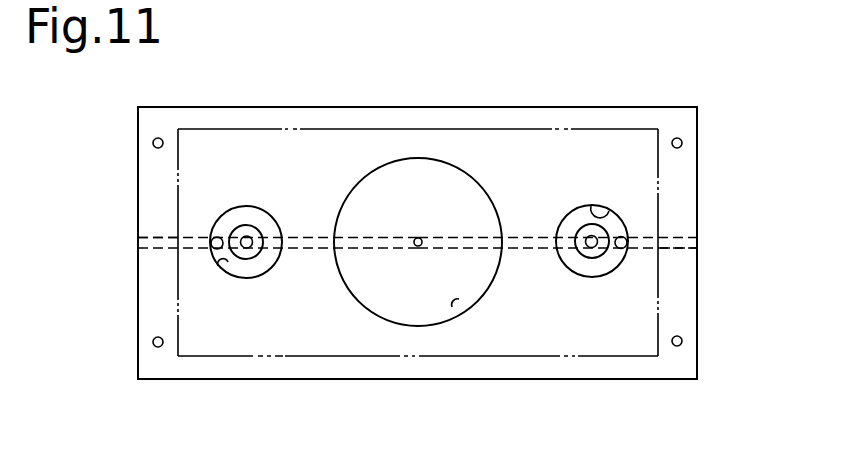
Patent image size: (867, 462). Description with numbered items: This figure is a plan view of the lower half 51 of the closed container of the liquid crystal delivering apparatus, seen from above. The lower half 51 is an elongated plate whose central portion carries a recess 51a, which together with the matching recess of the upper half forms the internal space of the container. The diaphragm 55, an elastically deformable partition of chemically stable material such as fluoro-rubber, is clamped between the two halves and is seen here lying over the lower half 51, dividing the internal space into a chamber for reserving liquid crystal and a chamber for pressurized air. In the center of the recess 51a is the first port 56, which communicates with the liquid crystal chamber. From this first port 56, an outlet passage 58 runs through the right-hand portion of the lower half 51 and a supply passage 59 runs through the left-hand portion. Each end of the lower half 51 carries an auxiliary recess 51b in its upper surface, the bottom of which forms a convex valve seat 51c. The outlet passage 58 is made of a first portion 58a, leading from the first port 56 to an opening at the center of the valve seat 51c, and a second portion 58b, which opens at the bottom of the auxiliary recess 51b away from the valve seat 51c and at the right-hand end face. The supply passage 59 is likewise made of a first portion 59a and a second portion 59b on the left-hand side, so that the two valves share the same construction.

The lower half 51 is at (600, 107).
The recess 51a is at (453, 303).
The auxiliary recess 51b is at (223, 267).
The valve seat 51c is at (247, 252).
The diaphragm 55 is at (513, 129).
The first port 56 is at (417, 247).
The outlet passage 58 is at (523, 237).
The first portion of the outlet passage 58a is at (521, 249).
The second portion of the outlet passage 58b is at (665, 250).
The supply passage 59 is at (304, 237).
The first portion of the supply passage 59a is at (303, 249).
The second portion of the supply passage 59b is at (158, 236).